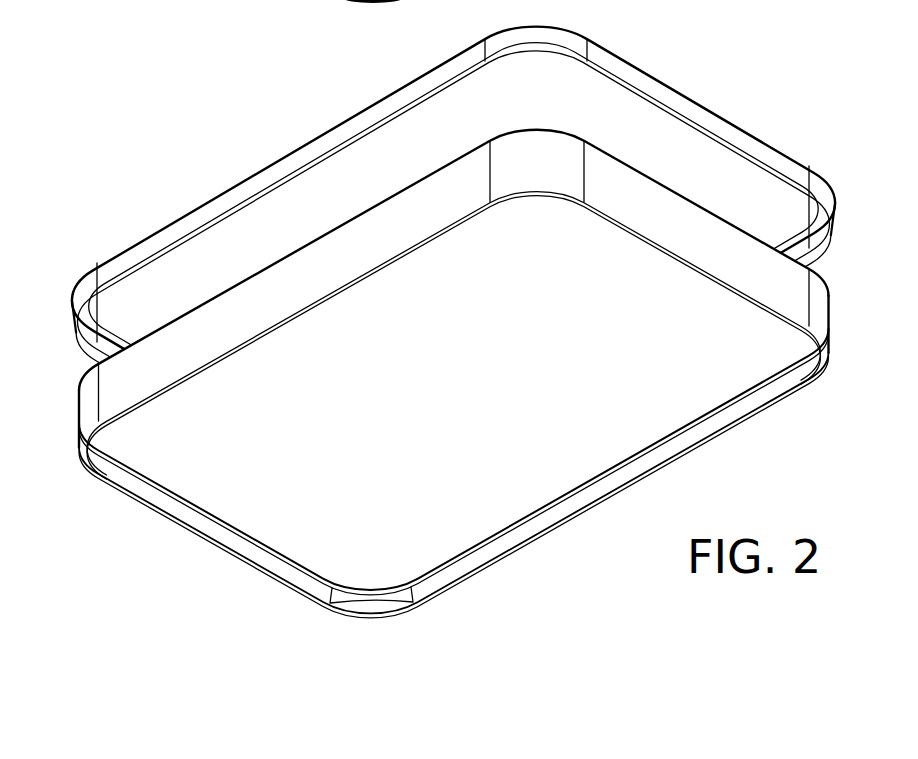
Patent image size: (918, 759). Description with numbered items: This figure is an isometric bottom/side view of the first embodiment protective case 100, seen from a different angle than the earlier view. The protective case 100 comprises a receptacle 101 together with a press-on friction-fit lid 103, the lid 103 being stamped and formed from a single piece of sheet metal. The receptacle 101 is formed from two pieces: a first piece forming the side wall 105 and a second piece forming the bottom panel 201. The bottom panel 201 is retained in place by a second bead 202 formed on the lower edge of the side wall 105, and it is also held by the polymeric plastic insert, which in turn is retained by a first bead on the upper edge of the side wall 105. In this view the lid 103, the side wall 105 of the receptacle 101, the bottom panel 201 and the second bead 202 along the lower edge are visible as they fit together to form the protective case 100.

The protective case 100 is at (424, 314).
The receptacle 101 is at (421, 374).
The lid 103 is at (303, 148).
The side wall 105 is at (113, 391).
The bottom panel 201 is at (234, 499).
The second bead 202 is at (712, 430).